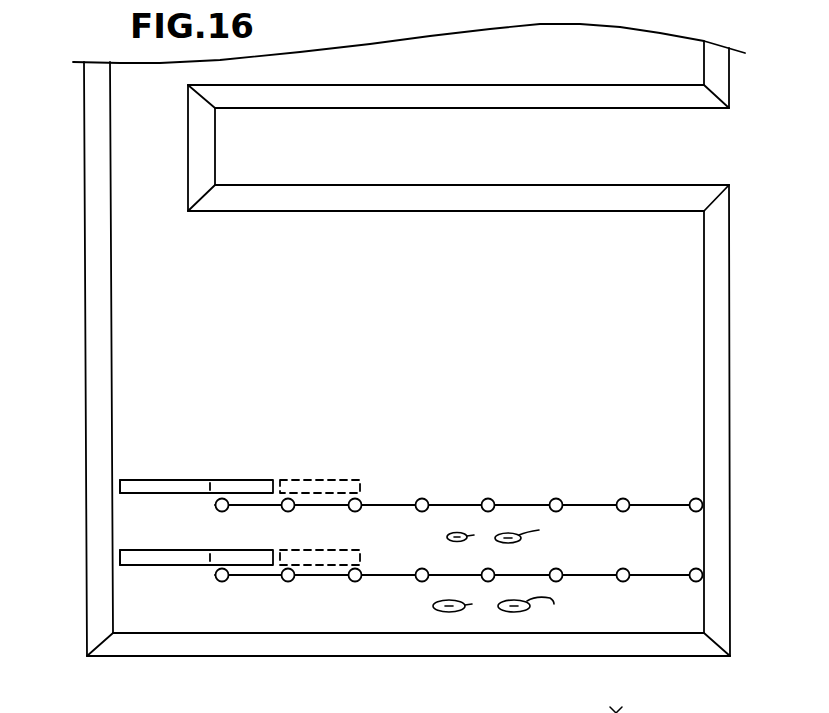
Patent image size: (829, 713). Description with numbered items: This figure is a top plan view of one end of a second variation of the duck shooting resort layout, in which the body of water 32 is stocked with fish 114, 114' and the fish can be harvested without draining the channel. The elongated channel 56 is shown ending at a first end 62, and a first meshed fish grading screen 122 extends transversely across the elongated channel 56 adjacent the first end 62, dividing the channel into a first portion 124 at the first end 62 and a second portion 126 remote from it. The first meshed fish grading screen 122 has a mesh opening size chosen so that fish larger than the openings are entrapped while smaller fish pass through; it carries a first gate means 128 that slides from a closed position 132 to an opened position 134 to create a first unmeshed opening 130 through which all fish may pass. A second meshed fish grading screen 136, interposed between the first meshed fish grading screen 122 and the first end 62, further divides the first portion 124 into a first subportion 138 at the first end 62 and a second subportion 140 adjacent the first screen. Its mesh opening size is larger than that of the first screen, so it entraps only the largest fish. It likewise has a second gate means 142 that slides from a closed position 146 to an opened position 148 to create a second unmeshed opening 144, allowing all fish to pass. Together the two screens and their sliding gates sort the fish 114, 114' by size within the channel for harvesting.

The body of water 32 is at (682, 413).
The elongated channel 56 is at (670, 444).
The first end 62 is at (693, 619).
The second portion 126 is at (141, 390).
The first portion 124 is at (672, 552).
The first meshed fish grading screen 122 is at (378, 505).
The second meshed fish grading screen 136 is at (388, 575).
The second subportion 140 is at (647, 520).
The first gate means 128 is at (233, 485).
The closed position 132 is at (140, 480).
The first unmeshed opening 130 is at (166, 506).
The opened position 134 is at (320, 475).
The second gate means 142 is at (248, 550).
The closed position 146 is at (142, 550).
The second unmeshed opening 144 is at (160, 582).
The opened position 148 is at (323, 563).
The first subportion 138 is at (260, 612).
The fish 114 is at (488, 610).
The fish 114' is at (519, 530).